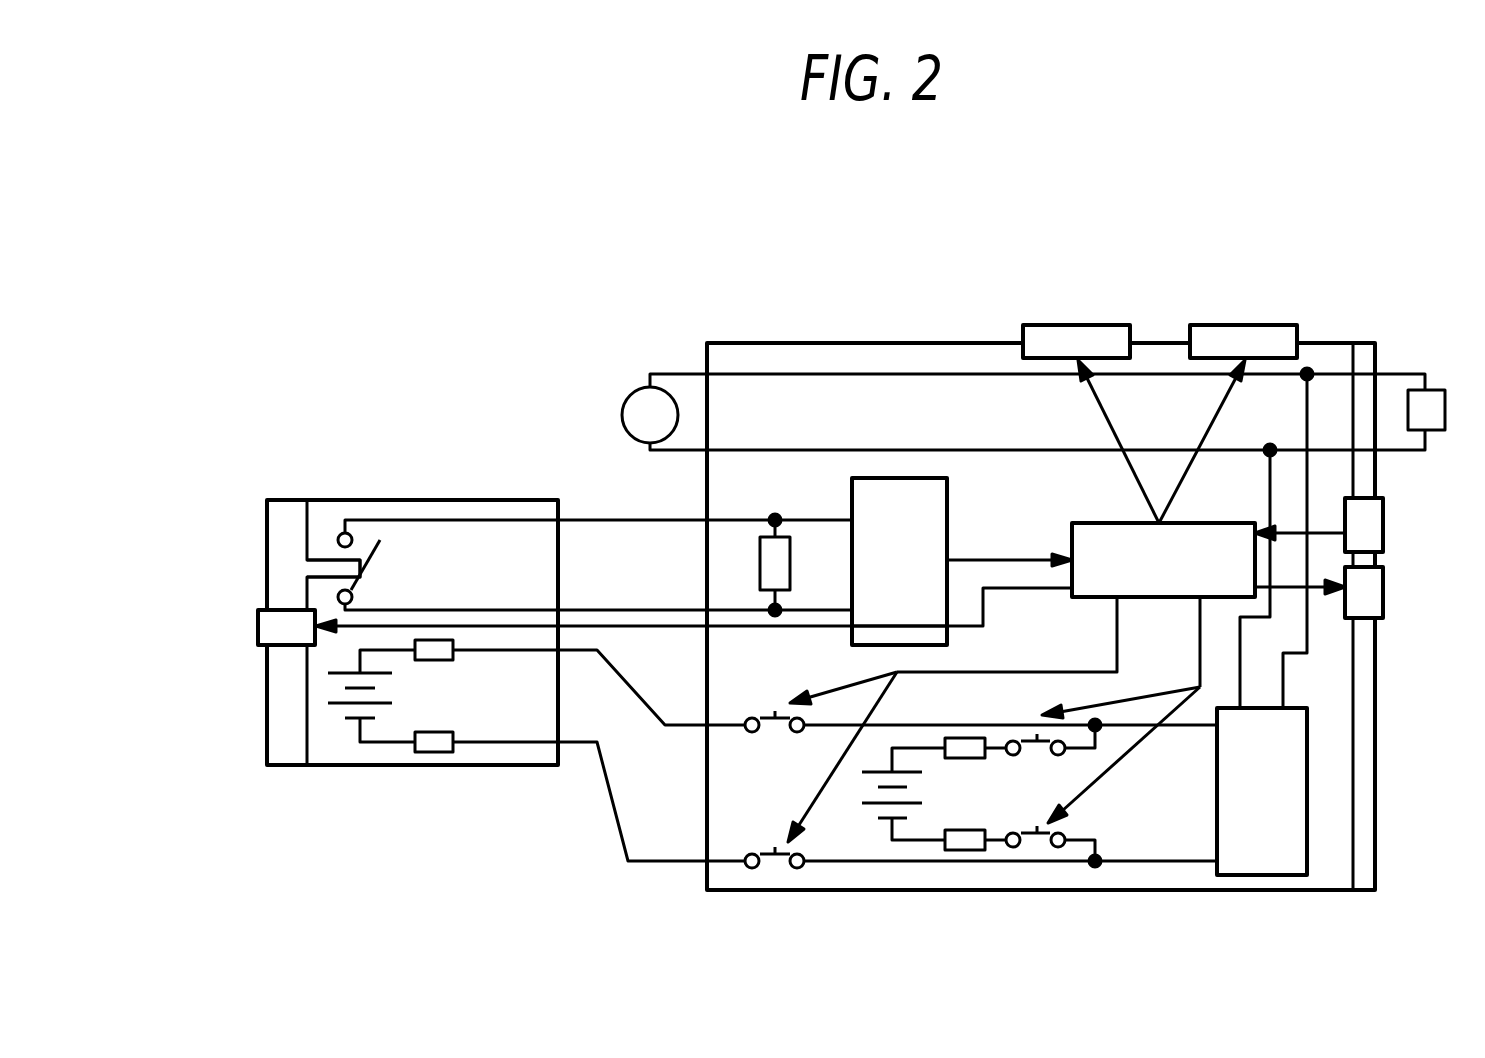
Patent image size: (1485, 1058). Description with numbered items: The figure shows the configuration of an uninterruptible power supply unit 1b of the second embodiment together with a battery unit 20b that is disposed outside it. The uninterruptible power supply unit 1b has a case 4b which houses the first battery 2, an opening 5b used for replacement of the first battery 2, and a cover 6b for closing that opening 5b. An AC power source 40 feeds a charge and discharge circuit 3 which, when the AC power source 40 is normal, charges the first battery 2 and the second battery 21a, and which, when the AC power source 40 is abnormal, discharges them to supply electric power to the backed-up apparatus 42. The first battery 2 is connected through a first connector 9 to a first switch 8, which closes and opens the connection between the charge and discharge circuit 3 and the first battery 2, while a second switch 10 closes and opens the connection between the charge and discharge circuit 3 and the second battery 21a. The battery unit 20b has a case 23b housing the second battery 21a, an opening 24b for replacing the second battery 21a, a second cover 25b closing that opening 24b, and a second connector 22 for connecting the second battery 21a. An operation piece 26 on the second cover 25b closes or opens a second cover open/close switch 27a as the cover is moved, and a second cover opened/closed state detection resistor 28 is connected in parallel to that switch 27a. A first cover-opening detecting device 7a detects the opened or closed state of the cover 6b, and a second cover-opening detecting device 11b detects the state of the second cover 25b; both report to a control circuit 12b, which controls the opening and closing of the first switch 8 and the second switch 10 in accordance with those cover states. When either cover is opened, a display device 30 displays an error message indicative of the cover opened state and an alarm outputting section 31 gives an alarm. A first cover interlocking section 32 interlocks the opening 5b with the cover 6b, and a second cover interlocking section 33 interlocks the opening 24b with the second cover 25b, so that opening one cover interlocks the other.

The uninterruptible power supply unit 1b is at (901, 266).
The battery unit 20b is at (414, 418).
The AC power source 40 is at (630, 395).
The backed-up apparatus 42 is at (1433, 390).
The case 4b is at (958, 343).
The display device 30 is at (1077, 325).
The alarm outputting section 31 is at (1245, 325).
The opening 5b is at (1354, 343).
The cover 6b is at (1375, 686).
The second cover-opening detecting device 11b is at (947, 518).
The control circuit 12b is at (1103, 523).
The second cover opened/closed state detection resistor 28 is at (760, 575).
The first cover-opening detecting device 7a is at (1383, 528).
The first cover interlocking section 32 is at (1383, 592).
The charge and discharge circuit 3 is at (1307, 790).
The second switch 10 is at (755, 733).
The first switch 8 is at (1016, 755).
The first connector 9 is at (963, 758).
The first battery 2 is at (855, 797).
The case 23b is at (487, 500).
The opening 24b is at (307, 500).
The second cover 25b is at (267, 500).
The operation piece 26 is at (308, 567).
The second cover open/close switch 27a is at (380, 552).
The second cover interlocking section 33 is at (262, 612).
The second battery 21a is at (340, 670).
The second connector 22 is at (438, 658).